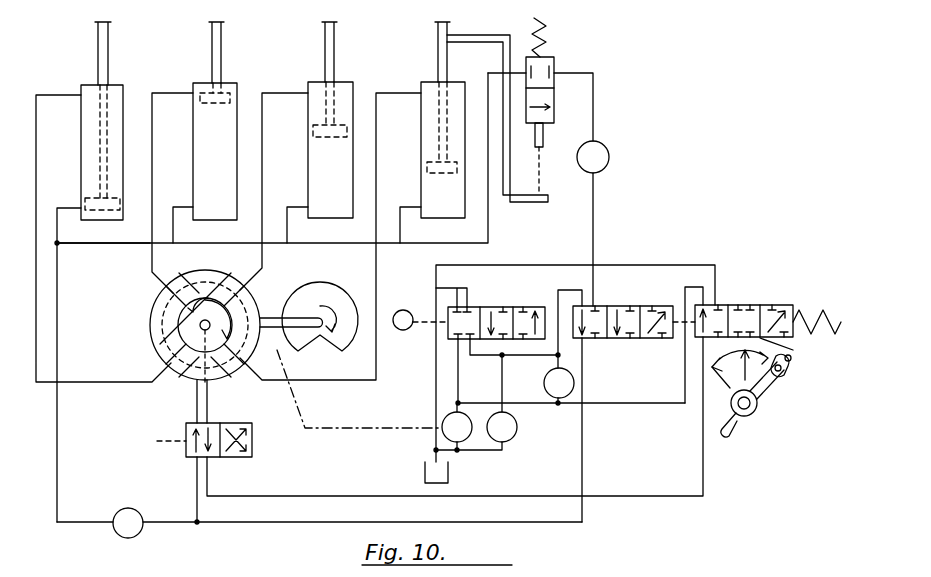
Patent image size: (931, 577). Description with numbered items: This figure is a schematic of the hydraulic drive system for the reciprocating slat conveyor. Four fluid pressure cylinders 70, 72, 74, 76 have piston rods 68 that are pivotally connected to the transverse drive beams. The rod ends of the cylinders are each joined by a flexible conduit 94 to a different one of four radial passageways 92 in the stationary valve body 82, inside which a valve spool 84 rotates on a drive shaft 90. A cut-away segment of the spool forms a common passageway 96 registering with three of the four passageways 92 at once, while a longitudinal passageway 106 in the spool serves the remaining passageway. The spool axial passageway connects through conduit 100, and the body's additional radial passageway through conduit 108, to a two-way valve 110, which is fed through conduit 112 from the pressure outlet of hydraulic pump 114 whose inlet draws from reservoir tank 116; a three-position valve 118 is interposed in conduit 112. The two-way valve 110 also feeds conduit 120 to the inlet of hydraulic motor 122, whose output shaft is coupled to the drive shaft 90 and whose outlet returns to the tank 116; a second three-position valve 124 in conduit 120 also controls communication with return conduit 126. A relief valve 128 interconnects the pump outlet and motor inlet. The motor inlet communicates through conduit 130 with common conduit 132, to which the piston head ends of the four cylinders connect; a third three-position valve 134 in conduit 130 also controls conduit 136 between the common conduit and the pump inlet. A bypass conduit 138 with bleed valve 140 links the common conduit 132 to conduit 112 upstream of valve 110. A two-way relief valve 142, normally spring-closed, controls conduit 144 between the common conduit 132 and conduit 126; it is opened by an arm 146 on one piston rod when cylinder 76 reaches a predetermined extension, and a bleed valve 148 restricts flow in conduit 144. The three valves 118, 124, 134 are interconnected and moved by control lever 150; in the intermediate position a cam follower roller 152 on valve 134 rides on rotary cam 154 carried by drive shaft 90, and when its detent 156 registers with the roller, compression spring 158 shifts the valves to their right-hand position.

The piston rods 68 is at (212, 45).
The fluid pressure cylinder 70 is at (81, 152).
The fluid pressure cylinder 72 is at (193, 150).
The fluid pressure cylinder 74 is at (308, 152).
The fluid pressure cylinder 76 is at (421, 150).
The valve body 82 is at (150, 326).
The valve spool 84 is at (172, 340).
The drive shaft 90 is at (293, 313).
The radial passageways 92 is at (165, 285).
The flexible conduit 94 is at (36, 177).
The common passageway 96 is at (215, 345).
The flexible conduit 100 is at (347, 389).
The longitudinal passageway 106 is at (195, 290).
The flexible conduit 108 is at (197, 410).
The two-way valve 110 is at (232, 458).
The conduit 112 is at (572, 286).
The hydraulic pump 114 is at (517, 430).
The reservoir tank 116 is at (425, 472).
The three-position valve 118 is at (655, 290).
The conduit 120 is at (310, 497).
The hydraulic motor 122 is at (472, 437).
The second three-position valve 124 is at (765, 296).
The conduit 126 is at (436, 378).
The relief valve 128 is at (575, 378).
The conduit 130 is at (458, 388).
The common conduit 132 is at (130, 248).
The third three-position valve 134 is at (525, 285).
The conduit 136 is at (495, 357).
The bypass conduit 138 is at (57, 452).
The bleed valve 140 is at (128, 508).
The two-way relief valve 142 is at (554, 62).
The conduit 144 is at (593, 200).
The arm 146 is at (532, 204).
The bleed valve 148 is at (609, 160).
The control lever 150 is at (737, 413).
The cam follower roller 152 is at (405, 330).
The rotary cam 154 is at (355, 278).
The detent 156 is at (327, 343).
The compression spring 158 is at (818, 315).